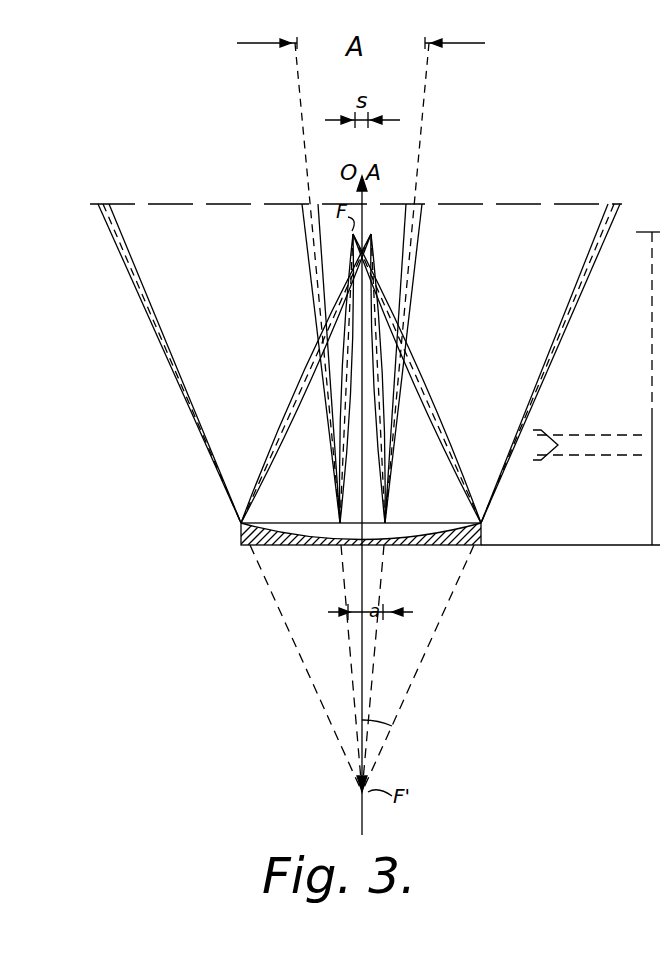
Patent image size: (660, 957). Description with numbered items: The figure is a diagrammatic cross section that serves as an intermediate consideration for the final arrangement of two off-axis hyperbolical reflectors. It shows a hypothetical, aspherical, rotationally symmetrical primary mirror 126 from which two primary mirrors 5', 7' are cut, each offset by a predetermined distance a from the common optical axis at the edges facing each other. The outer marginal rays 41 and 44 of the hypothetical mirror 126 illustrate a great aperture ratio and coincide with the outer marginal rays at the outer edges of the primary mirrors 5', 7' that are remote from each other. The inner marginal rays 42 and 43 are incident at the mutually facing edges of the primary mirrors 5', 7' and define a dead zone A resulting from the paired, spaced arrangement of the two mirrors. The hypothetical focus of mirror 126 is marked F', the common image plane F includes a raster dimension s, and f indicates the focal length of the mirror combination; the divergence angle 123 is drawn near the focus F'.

The outer marginal ray 41 is at (137, 194).
The inner marginal ray 42 is at (305, 200).
The inner marginal ray 43 is at (424, 200).
The outer marginal ray 44 is at (607, 212).
The hypothetical aspherical rotationally symmetrical primary mirror 126 is at (292, 522).
The primary mirror 5' is at (306, 668).
The primary mirror 7' is at (418, 668).
The divergence angle 123 is at (401, 726).